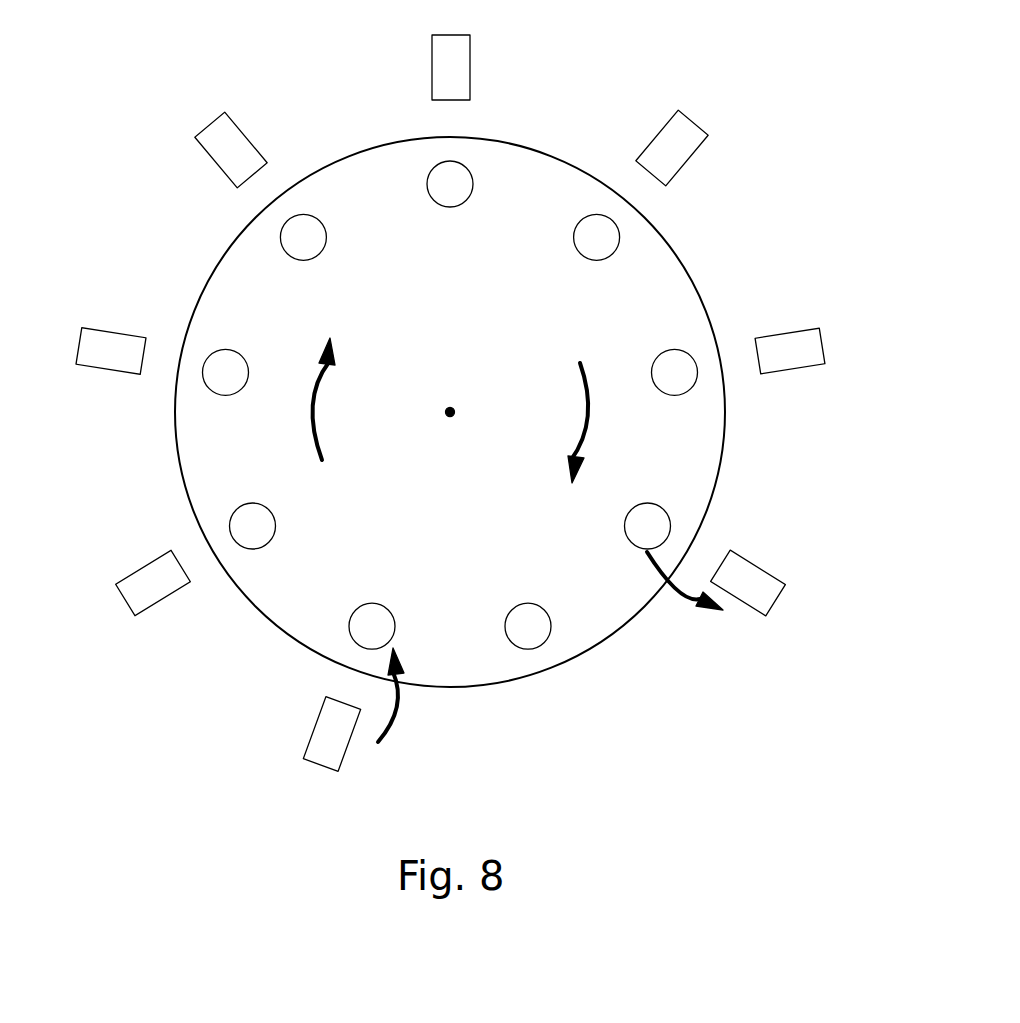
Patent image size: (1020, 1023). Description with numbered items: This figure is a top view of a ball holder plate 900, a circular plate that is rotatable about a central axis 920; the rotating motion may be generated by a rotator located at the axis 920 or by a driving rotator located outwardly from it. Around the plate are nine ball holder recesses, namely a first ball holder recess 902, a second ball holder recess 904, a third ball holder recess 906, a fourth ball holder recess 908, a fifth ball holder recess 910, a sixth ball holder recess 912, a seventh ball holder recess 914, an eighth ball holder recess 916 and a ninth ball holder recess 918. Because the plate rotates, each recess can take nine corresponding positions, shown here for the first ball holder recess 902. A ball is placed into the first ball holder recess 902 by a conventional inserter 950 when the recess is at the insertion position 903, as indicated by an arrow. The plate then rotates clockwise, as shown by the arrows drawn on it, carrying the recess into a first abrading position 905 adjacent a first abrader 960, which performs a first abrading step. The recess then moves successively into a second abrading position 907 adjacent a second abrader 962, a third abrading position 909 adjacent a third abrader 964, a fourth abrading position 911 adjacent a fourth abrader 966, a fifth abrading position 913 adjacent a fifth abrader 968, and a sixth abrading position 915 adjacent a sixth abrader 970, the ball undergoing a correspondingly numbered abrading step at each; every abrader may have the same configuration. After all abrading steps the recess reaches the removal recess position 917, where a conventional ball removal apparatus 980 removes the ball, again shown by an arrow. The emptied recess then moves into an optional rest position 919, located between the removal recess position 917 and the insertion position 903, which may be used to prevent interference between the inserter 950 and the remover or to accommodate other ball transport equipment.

The ball holder plate 900 is at (599, 599).
The first ball holder recess 902 is at (353, 640).
The insertion position 903 is at (326, 680).
The second ball holder recess 904 is at (229, 525).
The first abrading position 905 is at (204, 582).
The third ball holder recess 906 is at (202, 372).
The second abrading position 907 is at (162, 345).
The fourth ball holder recess 908 is at (281, 229).
The third abrading position 909 is at (278, 172).
The fifth ball holder recess 910 is at (473, 183).
The fourth abrading position 911 is at (474, 120).
The sixth ball holder recess 912 is at (603, 259).
The fifth abrading position 913 is at (663, 202).
The seventh ball holder recess 914 is at (698, 372).
The sixth abrading position 915 is at (739, 336).
The eighth ball holder recess 916 is at (671, 527).
The removal recess position 917 is at (718, 541).
The ninth ball holder recess 918 is at (526, 649).
The rest position 919 is at (568, 698).
The axis 920 is at (455, 410).
The inserter 950 is at (312, 760).
The first abrader 960 is at (137, 570).
The second abrader 962 is at (107, 328).
The third abrader 964 is at (243, 128).
The fourth abrader 966 is at (470, 48).
The fifth abrader 968 is at (692, 123).
The sixth abrader 970 is at (825, 347).
The ball removal apparatus 980 is at (785, 595).